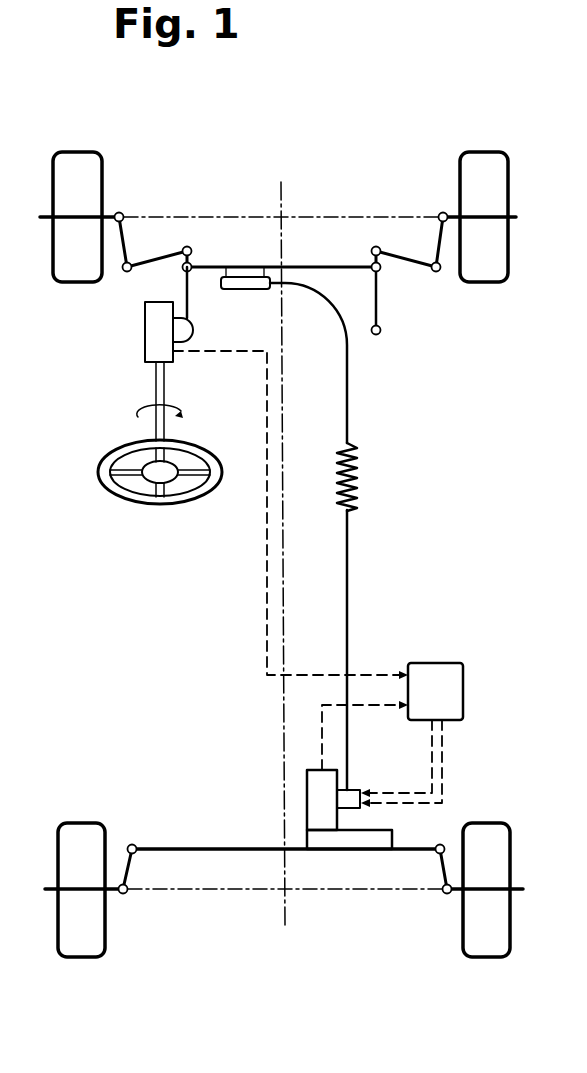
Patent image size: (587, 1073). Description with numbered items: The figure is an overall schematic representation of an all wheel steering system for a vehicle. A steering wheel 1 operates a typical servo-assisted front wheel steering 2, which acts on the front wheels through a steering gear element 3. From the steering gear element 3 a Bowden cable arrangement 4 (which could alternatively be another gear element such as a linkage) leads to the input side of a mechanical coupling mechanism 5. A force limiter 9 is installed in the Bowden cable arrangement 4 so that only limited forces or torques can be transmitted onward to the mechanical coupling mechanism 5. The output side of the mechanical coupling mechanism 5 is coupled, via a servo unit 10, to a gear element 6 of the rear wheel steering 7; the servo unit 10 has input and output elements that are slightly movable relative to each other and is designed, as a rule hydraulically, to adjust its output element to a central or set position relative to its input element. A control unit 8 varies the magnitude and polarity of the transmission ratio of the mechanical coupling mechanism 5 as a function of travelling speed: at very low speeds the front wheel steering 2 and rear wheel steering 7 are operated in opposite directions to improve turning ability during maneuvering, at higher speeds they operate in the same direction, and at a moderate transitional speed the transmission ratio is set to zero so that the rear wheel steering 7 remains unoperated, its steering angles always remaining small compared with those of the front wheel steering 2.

The steering wheel 1 is at (110, 486).
The front wheel steering 2 is at (228, 254).
The steering gear element 3 is at (331, 265).
The Bowden cable arrangement 4 is at (349, 385).
The mechanical coupling mechanism 5 is at (356, 794).
The gear element 6 is at (188, 847).
The rear wheel steering 7 is at (252, 896).
The control unit 8 is at (458, 693).
The force limiter 9 is at (358, 481).
The servo unit 10 is at (307, 801).